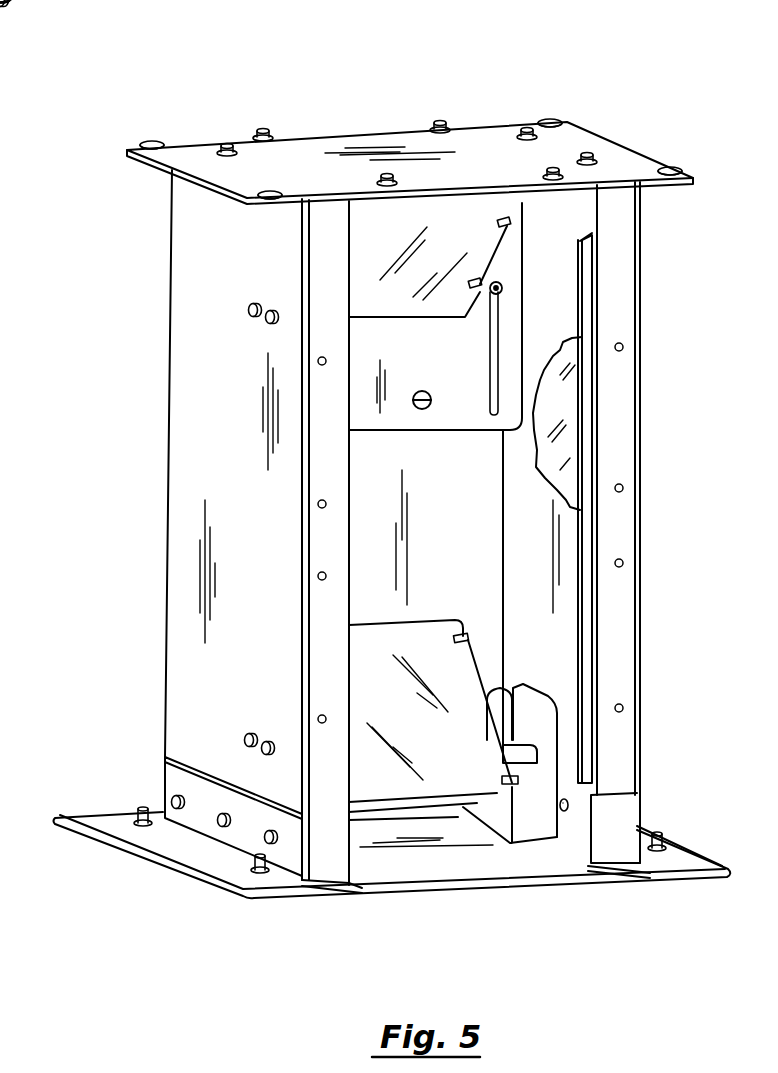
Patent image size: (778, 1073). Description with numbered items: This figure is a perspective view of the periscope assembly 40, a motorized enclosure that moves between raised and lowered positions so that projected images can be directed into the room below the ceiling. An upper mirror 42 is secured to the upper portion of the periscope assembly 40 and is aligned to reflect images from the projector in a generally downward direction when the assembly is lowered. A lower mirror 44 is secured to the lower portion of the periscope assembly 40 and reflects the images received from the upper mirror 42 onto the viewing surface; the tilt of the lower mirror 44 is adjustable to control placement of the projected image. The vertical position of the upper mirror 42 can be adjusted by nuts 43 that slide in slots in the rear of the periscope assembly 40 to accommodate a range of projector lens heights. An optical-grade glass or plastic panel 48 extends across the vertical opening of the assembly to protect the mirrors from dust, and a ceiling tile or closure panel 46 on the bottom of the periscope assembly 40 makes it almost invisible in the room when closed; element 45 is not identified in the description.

The periscope assembly 40 is at (155, 388).
The upper mirror 42 is at (428, 262).
The nuts 43 is at (503, 287).
The lower mirror 44 is at (448, 668).
The tab 45 is at (530, 738).
The ceiling tile or closure panel 46 is at (413, 892).
The optical-grade glass or plastic panel 48 is at (557, 397).